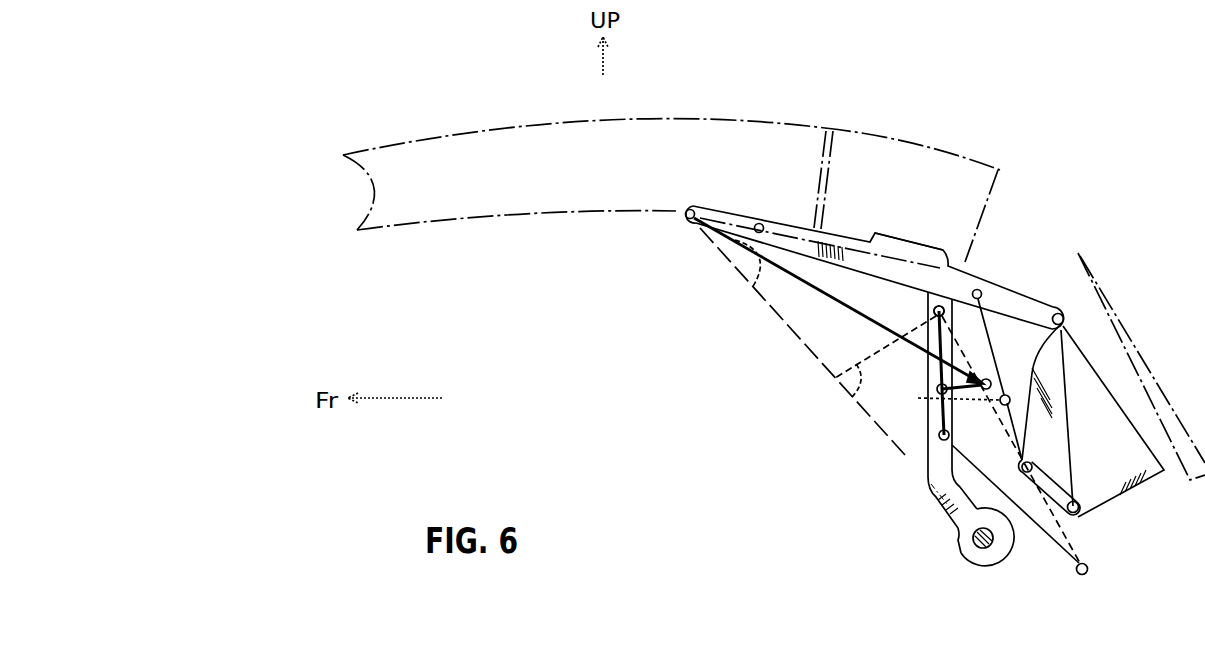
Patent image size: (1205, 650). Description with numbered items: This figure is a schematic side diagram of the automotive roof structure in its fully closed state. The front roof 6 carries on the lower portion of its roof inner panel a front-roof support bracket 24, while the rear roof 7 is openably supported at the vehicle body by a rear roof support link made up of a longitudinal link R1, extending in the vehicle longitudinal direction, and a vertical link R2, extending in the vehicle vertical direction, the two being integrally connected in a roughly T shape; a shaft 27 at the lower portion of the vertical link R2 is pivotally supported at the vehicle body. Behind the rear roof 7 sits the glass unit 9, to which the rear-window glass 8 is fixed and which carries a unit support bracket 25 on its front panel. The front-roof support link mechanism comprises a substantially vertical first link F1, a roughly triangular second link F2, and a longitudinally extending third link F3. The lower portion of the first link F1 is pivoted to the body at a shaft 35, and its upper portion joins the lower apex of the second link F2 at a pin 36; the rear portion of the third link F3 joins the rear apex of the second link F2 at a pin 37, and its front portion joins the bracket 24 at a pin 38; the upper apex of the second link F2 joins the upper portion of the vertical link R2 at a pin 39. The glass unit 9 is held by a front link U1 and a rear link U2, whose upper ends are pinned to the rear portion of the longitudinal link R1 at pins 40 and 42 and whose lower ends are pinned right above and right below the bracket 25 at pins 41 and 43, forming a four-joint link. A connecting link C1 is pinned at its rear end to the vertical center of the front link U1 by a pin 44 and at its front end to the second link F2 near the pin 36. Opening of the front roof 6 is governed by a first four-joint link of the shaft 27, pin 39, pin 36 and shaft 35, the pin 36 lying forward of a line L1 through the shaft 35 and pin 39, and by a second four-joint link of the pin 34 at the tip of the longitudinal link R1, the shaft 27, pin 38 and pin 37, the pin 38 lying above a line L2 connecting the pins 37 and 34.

The front roof 6 is at (492, 127).
The rear roof 7 is at (926, 147).
The rear-window glass 8 is at (1127, 321).
The glass unit 9 is at (1141, 366).
The front-roof support bracket 24 is at (722, 214).
The unit support bracket 25 is at (1122, 505).
The shaft 27 is at (978, 540).
The pin 34 is at (686, 207).
The shaft 35 is at (1084, 576).
The pin 36 is at (938, 437).
The pin 37 is at (985, 378).
The pin 38 is at (760, 222).
The pin 39 is at (934, 317).
The pin 40 is at (980, 289).
The pin 41 is at (1031, 462).
The pin 42 is at (1056, 311).
The pin 43 is at (1080, 513).
The pin 44 is at (1010, 403).
The longitudinal link R1 is at (911, 240).
The vertical link R2 is at (928, 470).
The front link U1 is at (1005, 394).
The rear link U2 is at (1073, 455).
The connecting link C1 is at (988, 403).
The first link F1 is at (1050, 541).
The second link F2 is at (937, 389).
The third link F3 is at (862, 312).
The line L1 is at (1083, 549).
The line L2 is at (738, 277).